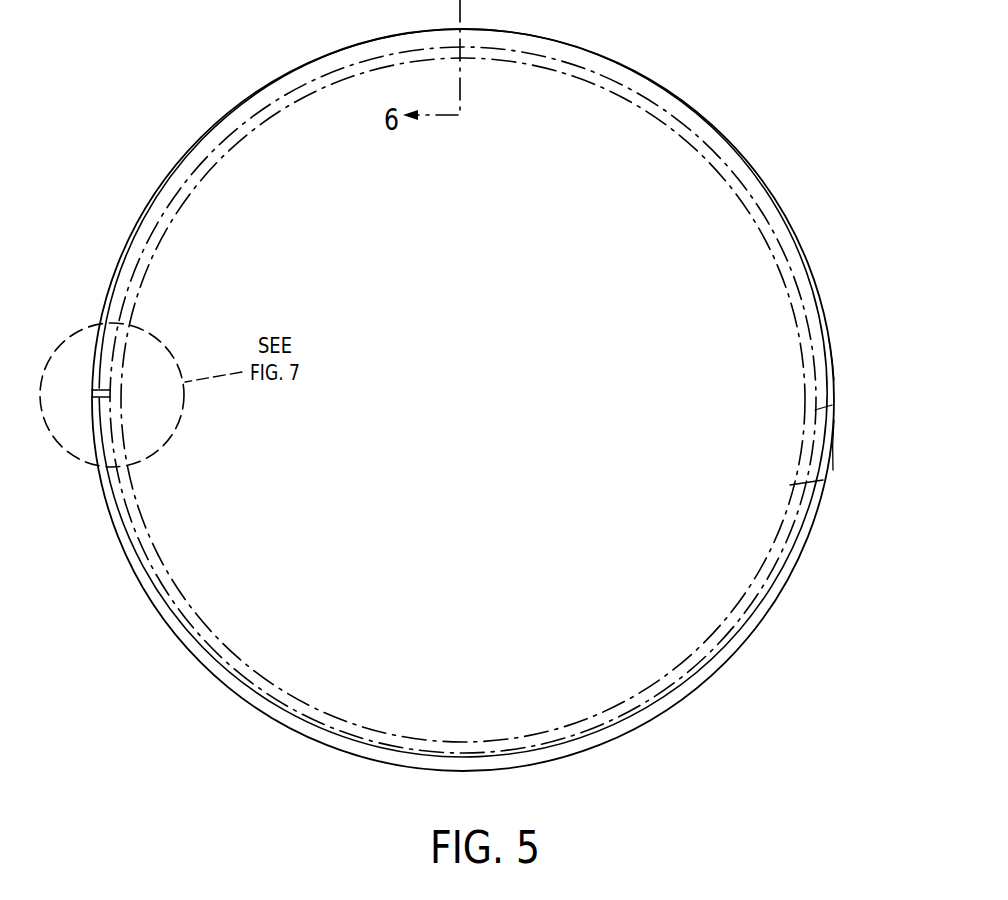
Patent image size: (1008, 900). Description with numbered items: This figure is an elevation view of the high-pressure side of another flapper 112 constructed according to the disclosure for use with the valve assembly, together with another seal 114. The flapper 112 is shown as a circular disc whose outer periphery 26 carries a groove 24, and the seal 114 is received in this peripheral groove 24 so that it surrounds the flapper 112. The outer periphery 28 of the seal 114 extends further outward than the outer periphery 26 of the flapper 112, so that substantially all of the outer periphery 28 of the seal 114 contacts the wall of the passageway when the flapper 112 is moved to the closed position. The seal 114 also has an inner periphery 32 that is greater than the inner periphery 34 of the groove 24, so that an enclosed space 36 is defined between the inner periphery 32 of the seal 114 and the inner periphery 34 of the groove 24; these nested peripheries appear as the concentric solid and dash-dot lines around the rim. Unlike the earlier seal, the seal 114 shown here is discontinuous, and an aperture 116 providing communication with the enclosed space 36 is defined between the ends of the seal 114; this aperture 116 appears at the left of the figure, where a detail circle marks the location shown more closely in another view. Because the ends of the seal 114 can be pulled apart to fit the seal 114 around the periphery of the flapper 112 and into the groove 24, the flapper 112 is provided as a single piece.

The flapper 112 is at (800, 181).
The seal 114 is at (845, 433).
The groove 24 is at (760, 235).
The enclosed space 36 is at (782, 268).
The outer periphery of the seal 28 is at (825, 308).
The outer periphery of the flapper 26 is at (830, 367).
The inner periphery of the seal 32 is at (840, 403).
The inner periphery of the groove 34 is at (827, 478).
The aperture 116 is at (92, 392).